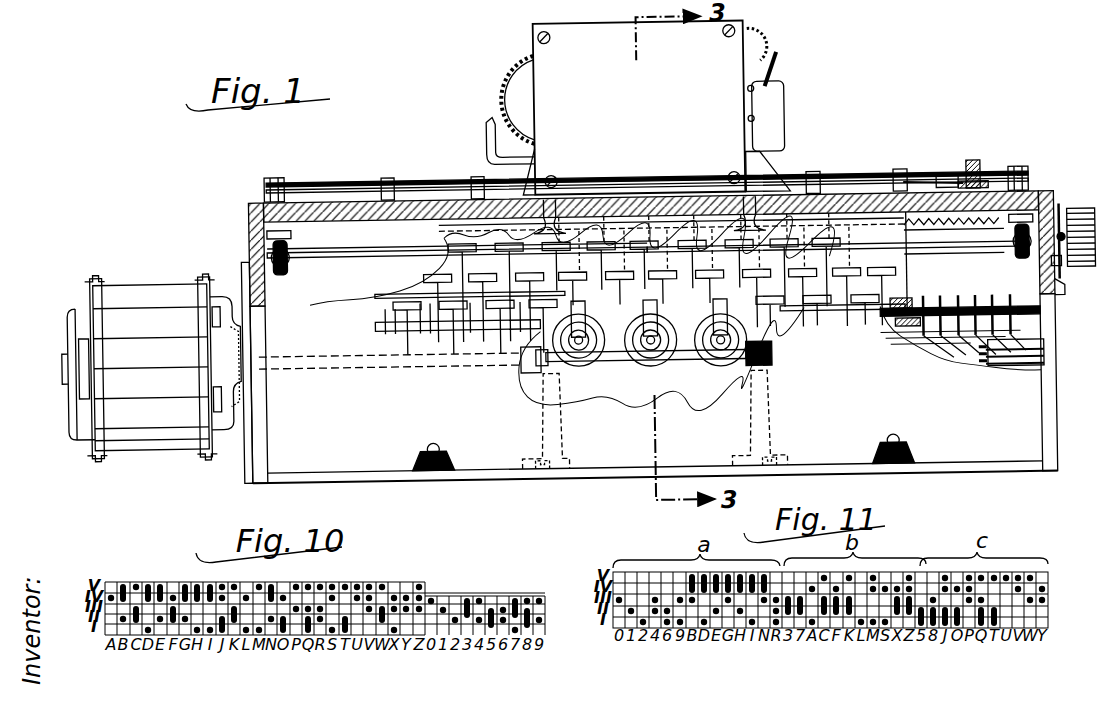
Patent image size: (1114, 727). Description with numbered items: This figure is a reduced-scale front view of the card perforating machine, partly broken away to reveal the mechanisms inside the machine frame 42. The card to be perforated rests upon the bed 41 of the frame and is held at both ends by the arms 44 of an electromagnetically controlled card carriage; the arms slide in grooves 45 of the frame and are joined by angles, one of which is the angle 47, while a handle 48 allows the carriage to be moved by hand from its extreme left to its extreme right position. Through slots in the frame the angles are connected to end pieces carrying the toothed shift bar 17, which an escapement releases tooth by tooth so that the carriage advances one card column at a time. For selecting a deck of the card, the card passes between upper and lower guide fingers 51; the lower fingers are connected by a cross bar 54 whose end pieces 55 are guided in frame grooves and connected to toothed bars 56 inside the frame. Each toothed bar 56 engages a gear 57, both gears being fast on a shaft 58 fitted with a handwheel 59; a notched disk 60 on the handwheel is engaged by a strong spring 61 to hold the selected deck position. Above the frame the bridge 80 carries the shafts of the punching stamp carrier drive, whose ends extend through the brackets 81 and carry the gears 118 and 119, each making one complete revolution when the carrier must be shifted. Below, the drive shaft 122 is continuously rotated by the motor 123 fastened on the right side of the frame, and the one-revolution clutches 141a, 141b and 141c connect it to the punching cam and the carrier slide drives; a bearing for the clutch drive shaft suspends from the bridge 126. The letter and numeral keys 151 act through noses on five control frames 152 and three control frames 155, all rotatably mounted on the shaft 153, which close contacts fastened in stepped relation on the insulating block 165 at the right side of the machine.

The bridge 80 is at (575, 30).
The gear 118 is at (512, 74).
The gear 119 is at (768, 62).
The handle 48 is at (489, 140).
The bracket 81 is at (770, 178).
The end piece 55 is at (1030, 167).
The cross bar 54 is at (362, 179).
The guide finger 51 is at (476, 178).
The bed 41 is at (896, 180).
The groove 45 is at (935, 184).
The arm 44 is at (950, 180).
The angle 47 is at (982, 175).
The machine frame 42 is at (262, 205).
The toothed bar 56 is at (252, 231).
The disk 60 is at (1056, 212).
The gear 57 is at (288, 258).
The bridge 126 is at (400, 239).
The shaft 58 is at (945, 254).
The shift bar 17 is at (990, 236).
The handwheel 59 is at (1060, 272).
The spring 61 is at (1060, 297).
The shaft 153 is at (886, 318).
The control frame 155 is at (930, 338).
The control frame 152 is at (965, 360).
The insulating block 165 is at (1043, 356).
The one-revolution clutch 141a is at (652, 367).
The one-revolution clutch 141b is at (716, 368).
The one-revolution clutch 141c is at (577, 366).
The drive shaft 122 is at (623, 362).
The key 151 is at (470, 298).
The motor 123 is at (158, 440).